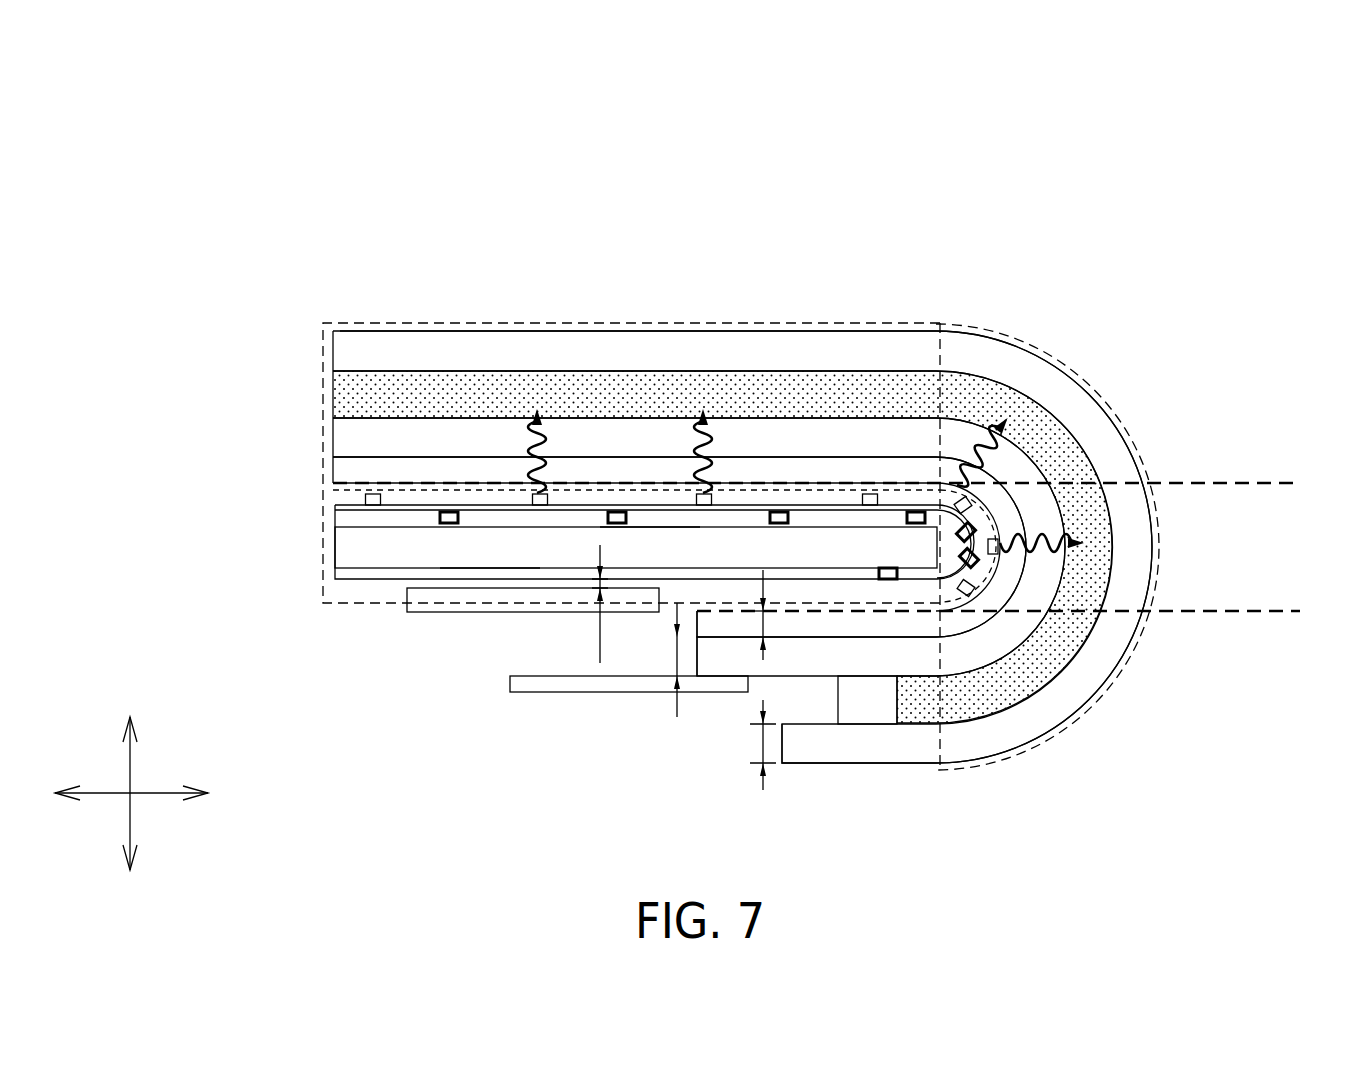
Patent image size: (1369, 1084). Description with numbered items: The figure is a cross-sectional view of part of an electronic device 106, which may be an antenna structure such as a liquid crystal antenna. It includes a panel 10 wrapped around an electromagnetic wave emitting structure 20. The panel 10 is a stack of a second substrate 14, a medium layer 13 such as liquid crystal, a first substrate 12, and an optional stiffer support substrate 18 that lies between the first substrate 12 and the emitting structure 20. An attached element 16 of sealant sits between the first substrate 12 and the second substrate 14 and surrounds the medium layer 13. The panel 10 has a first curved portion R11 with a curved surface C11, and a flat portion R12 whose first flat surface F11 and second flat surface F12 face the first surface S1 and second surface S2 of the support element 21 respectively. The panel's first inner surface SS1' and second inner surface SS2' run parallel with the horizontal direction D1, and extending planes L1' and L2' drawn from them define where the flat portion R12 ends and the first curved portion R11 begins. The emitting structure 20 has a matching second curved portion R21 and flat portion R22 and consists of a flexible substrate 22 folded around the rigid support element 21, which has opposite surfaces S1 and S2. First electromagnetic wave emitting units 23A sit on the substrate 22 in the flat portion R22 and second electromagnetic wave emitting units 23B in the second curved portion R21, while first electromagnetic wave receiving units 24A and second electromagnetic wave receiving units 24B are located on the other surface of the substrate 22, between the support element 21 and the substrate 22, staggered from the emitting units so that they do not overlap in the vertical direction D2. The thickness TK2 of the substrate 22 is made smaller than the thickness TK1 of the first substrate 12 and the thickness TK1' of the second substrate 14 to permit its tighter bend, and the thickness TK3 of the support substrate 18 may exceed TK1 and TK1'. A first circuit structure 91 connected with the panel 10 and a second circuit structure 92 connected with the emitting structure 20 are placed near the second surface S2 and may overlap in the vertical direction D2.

The electronic device 106 is at (1135, 128).
The panel 10 is at (671, 545).
The second substrate 14 is at (353, 353).
The medium layer 13 is at (353, 392).
The first substrate 12 is at (353, 437).
The support substrate 18 is at (640, 545).
The electromagnetic wave emitting structure 20 is at (691, 482).
The first electromagnetic wave emitting units 23A is at (345, 503).
The second electromagnetic wave emitting units 23B is at (963, 497).
The first electromagnetic wave receiving units 24A is at (617, 512).
The second electromagnetic wave receiving units 24B is at (970, 525).
The substrate 22 is at (347, 512).
The support element 21 is at (353, 558).
The first flat surface F11 is at (410, 331).
The second flat surface F12 is at (855, 764).
The first inner surface SS1' is at (638, 373).
The second inner surface SS2' is at (672, 683).
The first curved portion R11 is at (1077, 727).
The flat portion R12 is at (928, 320).
The second curved portion R21 is at (1000, 513).
The flat portion R22 is at (341, 606).
The curved surface C11 is at (1156, 545).
The extending plane L1' is at (840, 482).
The extending plane L2' is at (1022, 611).
The attached element 16 is at (882, 713).
The first circuit structure 91 is at (550, 693).
The second circuit structure 92 is at (444, 606).
The thickness of the first substrate TK1 is at (649, 660).
The thickness of the second substrate TK1' is at (740, 745).
The thickness of the substrate TK2 is at (577, 604).
The thickness of the support substrate TK3 is at (783, 615).
The first surface S1 is at (648, 528).
The second surface S2 is at (472, 568).
The horizontal direction D1 is at (151, 794).
The vertical direction D2 is at (129, 778).